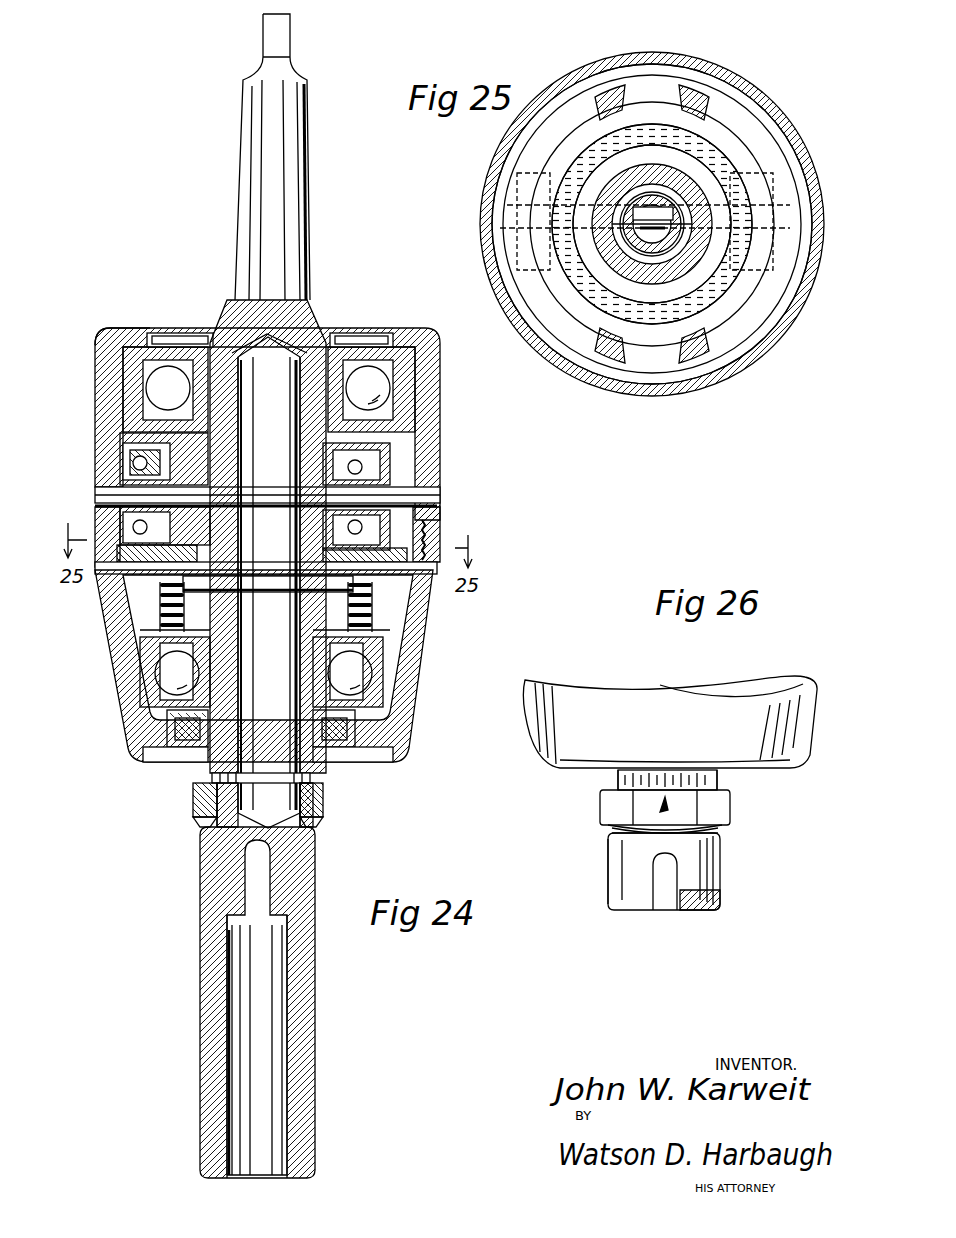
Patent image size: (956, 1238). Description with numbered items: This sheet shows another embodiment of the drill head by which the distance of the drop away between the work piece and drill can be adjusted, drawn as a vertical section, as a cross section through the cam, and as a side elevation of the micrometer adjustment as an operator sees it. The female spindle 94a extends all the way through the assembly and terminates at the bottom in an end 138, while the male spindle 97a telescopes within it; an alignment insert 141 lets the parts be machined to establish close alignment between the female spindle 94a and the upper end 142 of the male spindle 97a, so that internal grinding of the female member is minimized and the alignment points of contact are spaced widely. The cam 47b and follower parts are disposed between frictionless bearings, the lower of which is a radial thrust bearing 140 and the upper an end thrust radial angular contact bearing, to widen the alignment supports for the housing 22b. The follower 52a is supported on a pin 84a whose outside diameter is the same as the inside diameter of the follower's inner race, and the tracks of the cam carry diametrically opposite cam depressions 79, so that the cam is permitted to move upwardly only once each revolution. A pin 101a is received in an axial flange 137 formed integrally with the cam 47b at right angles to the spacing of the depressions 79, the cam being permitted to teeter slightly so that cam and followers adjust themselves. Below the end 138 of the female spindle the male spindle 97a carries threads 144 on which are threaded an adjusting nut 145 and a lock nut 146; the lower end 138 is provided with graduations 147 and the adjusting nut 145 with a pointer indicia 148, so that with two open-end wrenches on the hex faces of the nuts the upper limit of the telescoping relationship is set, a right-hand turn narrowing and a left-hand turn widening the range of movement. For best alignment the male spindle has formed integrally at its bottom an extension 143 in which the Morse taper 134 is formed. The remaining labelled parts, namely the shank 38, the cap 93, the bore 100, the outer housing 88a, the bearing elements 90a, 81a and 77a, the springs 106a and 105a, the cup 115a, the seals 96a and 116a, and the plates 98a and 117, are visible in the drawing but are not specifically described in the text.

In FIG. 24, the tapered shank 38 is at (305, 195).
In FIG. 24, the cover plate 93 is at (160, 318).
In FIG. 24, the upper end of the male spindle 142 is at (225, 332).
In FIG. 24, the female spindle 94a is at (305, 315).
In FIG. 25, the female spindle 94a is at (690, 185).
In FIG. 24, the alignment insert 141 is at (355, 332).
In FIG. 24, the tool shank bore 100 is at (420, 315).
In FIG. 24, the housing 88a is at (440, 340).
In FIG. 24, the ball 90a is at (385, 385).
In FIG. 24, the bearing race 81a is at (400, 412).
In FIG. 24, the frictionless bearing follower 52a is at (405, 433).
In FIG. 25, the frictionless bearing follower 52a is at (795, 148).
In FIG. 24, the thrust bearing 77a is at (435, 460).
In FIG. 25, the thrust bearing 77a is at (530, 206).
In FIG. 24, the pin 84a is at (440, 490).
In FIG. 25, the pin 84a is at (492, 238).
In FIG. 24, the cam 47b is at (425, 530).
In FIG. 25, the cam 47b is at (620, 350).
In FIG. 24, the spring 106a is at (160, 590).
In FIG. 24, the pin 101a is at (360, 605).
In FIG. 25, the pin 101a is at (655, 240).
In FIG. 24, the spring 105a is at (372, 630).
In FIG. 24, the cup 115a is at (398, 643).
In FIG. 25, the cup 115a is at (517, 195).
In FIG. 26, the cup 115a is at (765, 690).
In FIG. 24, the radial thrust bearing 140 is at (372, 680).
In FIG. 24, the axial flange 137 is at (150, 655).
In FIG. 24, the lower housing 22b is at (403, 703).
In FIG. 24, the seal 96a is at (175, 712).
In FIG. 24, the seal 116a is at (355, 732).
In FIG. 24, the bottom plate 117 is at (375, 757).
In FIG. 24, the bottom plate 98a is at (165, 760).
In FIG. 24, the lower end of the female spindle 138 is at (212, 777).
In FIG. 26, the lower end of the female spindle 138 is at (717, 786).
In FIG. 24, the male spindle 97a is at (310, 792).
In FIG. 25, the male spindle 97a is at (643, 205).
In FIG. 24, the adjusting nut 145 is at (193, 800).
In FIG. 26, the adjusting nut 145 is at (730, 808).
In FIG. 24, the threads 144 is at (323, 808).
In FIG. 26, the threads 144 is at (608, 845).
In FIG. 24, the lock nut 146 is at (196, 822).
In FIG. 26, the lock nut 146 is at (720, 828).
In FIG. 24, the extension 143 is at (200, 948).
In FIG. 26, the extension 143 is at (720, 875).
In FIG. 24, the Morse taper 134 is at (232, 995).
In FIG. 25, the cam depression 79 is at (680, 92).
In FIG. 26, the graduations 147 is at (618, 784).
In FIG. 26, the pointer indicia 148 is at (612, 835).